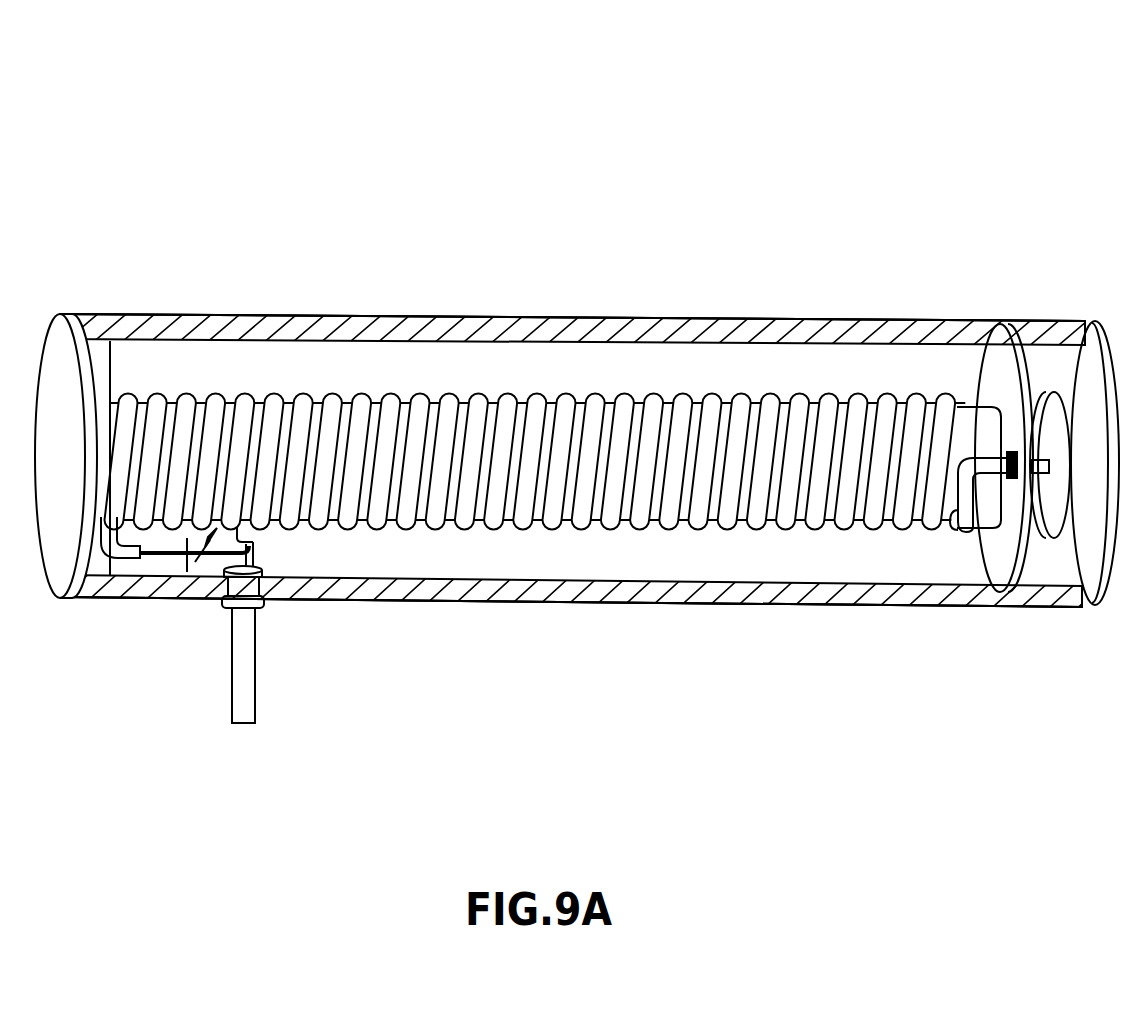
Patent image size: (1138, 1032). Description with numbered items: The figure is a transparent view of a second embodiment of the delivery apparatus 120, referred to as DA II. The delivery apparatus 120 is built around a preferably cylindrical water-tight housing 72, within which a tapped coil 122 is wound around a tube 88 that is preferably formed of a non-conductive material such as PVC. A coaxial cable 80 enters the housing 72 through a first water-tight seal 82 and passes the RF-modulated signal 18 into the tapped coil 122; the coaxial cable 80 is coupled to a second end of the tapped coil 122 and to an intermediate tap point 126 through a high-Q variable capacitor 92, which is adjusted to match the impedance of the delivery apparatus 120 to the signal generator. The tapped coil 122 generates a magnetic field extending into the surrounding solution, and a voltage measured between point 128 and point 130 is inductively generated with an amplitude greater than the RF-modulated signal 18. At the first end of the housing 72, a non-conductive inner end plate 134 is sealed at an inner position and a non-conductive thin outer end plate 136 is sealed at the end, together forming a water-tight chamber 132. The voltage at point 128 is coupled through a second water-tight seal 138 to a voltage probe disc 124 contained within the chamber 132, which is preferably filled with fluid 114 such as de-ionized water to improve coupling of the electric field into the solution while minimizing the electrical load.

The delivery apparatus 120 is at (858, 137).
The water-tight housing 72 is at (580, 317).
The tube 88 is at (103, 314).
The variable capacitor 92 is at (186, 598).
The point 130 is at (116, 602).
The outer end plate 136 is at (1098, 323).
The water-tight chamber 132 is at (1068, 568).
The inner end plate 134 is at (992, 323).
The voltage probe disc 124 is at (1043, 323).
The second water-tight seal 138 is at (1008, 453).
The fluid 114 is at (1030, 563).
The tapped coil 122 is at (365, 393).
The intermediate tap point 126 is at (255, 536).
The point 128 is at (958, 520).
The first water-tight seal 82 is at (258, 612).
The coaxial cable 80 is at (257, 668).
The RF-modulated signal 18 is at (243, 725).